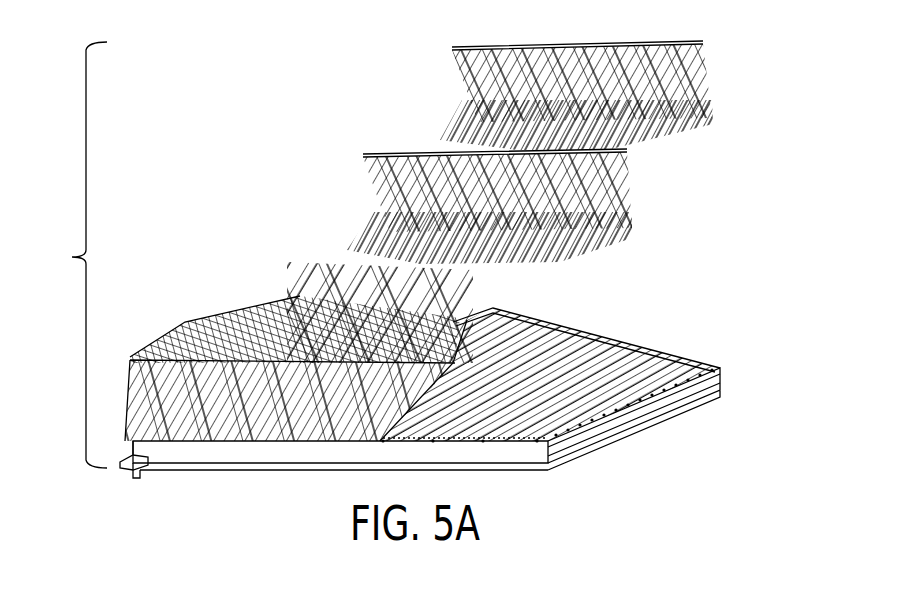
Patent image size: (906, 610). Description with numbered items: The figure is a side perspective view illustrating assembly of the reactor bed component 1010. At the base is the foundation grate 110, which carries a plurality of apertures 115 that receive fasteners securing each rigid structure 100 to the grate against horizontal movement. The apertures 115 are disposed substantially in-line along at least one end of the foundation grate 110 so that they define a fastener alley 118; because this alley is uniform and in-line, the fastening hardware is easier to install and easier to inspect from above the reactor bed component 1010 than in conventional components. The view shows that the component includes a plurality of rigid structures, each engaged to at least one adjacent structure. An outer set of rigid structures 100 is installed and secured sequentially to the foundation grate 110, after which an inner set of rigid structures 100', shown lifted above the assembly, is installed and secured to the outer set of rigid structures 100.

The reactor bed component 1010 is at (72, 257).
The rigid structure 100 is at (300, 343).
The inner rigid structure 100' is at (498, 155).
The foundation grate 110 is at (723, 375).
The apertures 115 is at (702, 368).
The fastener alley 118 is at (638, 413).